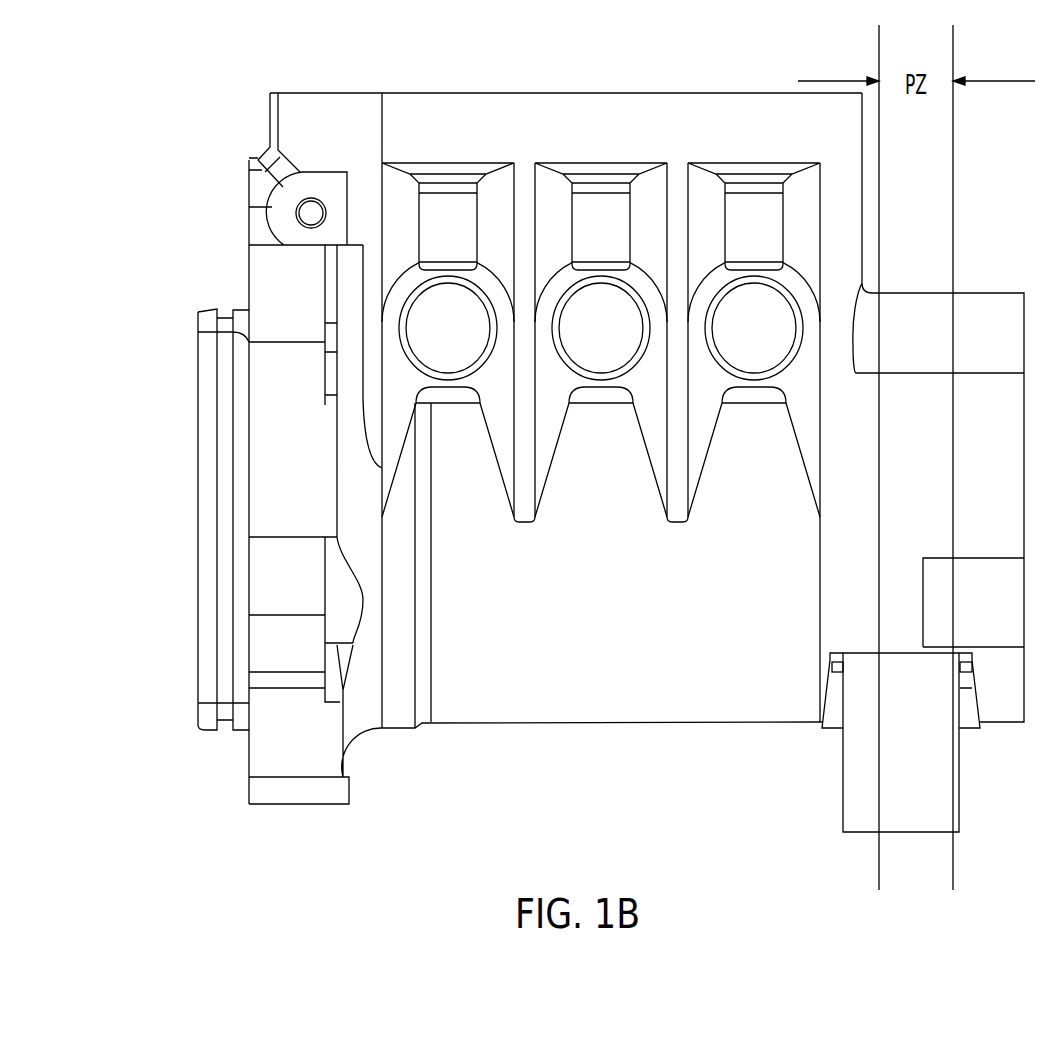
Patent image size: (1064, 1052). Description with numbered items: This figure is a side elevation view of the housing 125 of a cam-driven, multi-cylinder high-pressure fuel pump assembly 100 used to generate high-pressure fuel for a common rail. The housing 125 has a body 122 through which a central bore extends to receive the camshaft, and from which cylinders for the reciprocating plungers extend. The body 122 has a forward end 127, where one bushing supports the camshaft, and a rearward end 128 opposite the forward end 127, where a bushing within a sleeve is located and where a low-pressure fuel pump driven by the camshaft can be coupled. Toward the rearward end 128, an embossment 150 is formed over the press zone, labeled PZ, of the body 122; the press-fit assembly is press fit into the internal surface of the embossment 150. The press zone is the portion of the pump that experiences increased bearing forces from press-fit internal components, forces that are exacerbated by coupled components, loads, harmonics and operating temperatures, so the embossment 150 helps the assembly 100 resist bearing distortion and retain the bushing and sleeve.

The high-pressure fuel pump assembly 100 is at (106, 102).
The body 122 is at (461, 117).
The housing 125 is at (693, 86).
The forward end 127 is at (189, 226).
The rearward end 128 is at (1029, 226).
The embossment 150 is at (900, 572).